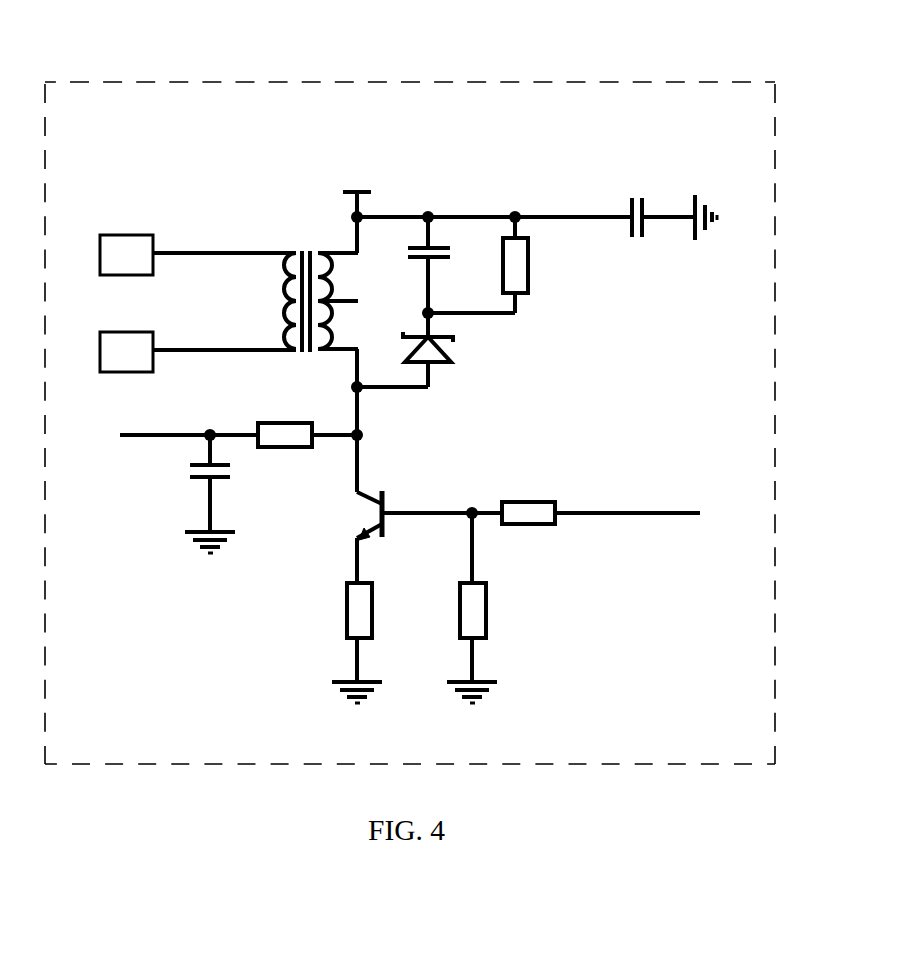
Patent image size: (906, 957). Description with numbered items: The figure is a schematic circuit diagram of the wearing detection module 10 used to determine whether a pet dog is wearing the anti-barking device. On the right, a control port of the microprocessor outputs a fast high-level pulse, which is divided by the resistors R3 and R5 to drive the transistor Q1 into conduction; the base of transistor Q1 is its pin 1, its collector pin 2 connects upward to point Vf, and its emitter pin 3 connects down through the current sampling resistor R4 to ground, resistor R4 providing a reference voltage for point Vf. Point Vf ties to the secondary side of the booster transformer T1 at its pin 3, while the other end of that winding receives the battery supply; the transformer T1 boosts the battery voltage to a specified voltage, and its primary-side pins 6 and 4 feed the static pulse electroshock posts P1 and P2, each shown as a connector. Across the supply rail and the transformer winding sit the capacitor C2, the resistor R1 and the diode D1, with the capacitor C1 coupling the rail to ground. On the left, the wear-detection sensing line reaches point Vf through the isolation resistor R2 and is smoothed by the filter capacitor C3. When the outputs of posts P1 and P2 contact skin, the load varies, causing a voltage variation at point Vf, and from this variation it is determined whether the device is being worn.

The wearing detection module 10 is at (448, 82).
The connector pin 1 is at (198, 245).
The transistor pin 2 (collector) 2 is at (420, 523).
The transistor pin 3 (emitter) 3 is at (420, 523).
The transformer pin 4 is at (198, 342).
The transformer pin 6 is at (305, 286).
The booster transformer T1 is at (305, 286).
The transistor Q1 is at (420, 523).
The zener diode D1 is at (444, 359).
The static pulse electroshock post P1 is at (198, 245).
The static pulse electroshock post P2 is at (198, 342).
The resistor R1 is at (491, 265).
The isolation resistor R2 is at (238, 426).
The resistor R3 is at (601, 504).
The current sampling resistor R4 is at (364, 643).
The resistor R5 is at (480, 608).
The capacitor C1 is at (671, 209).
The capacitor C2 is at (441, 277).
The filter capacitor C3 is at (219, 494).